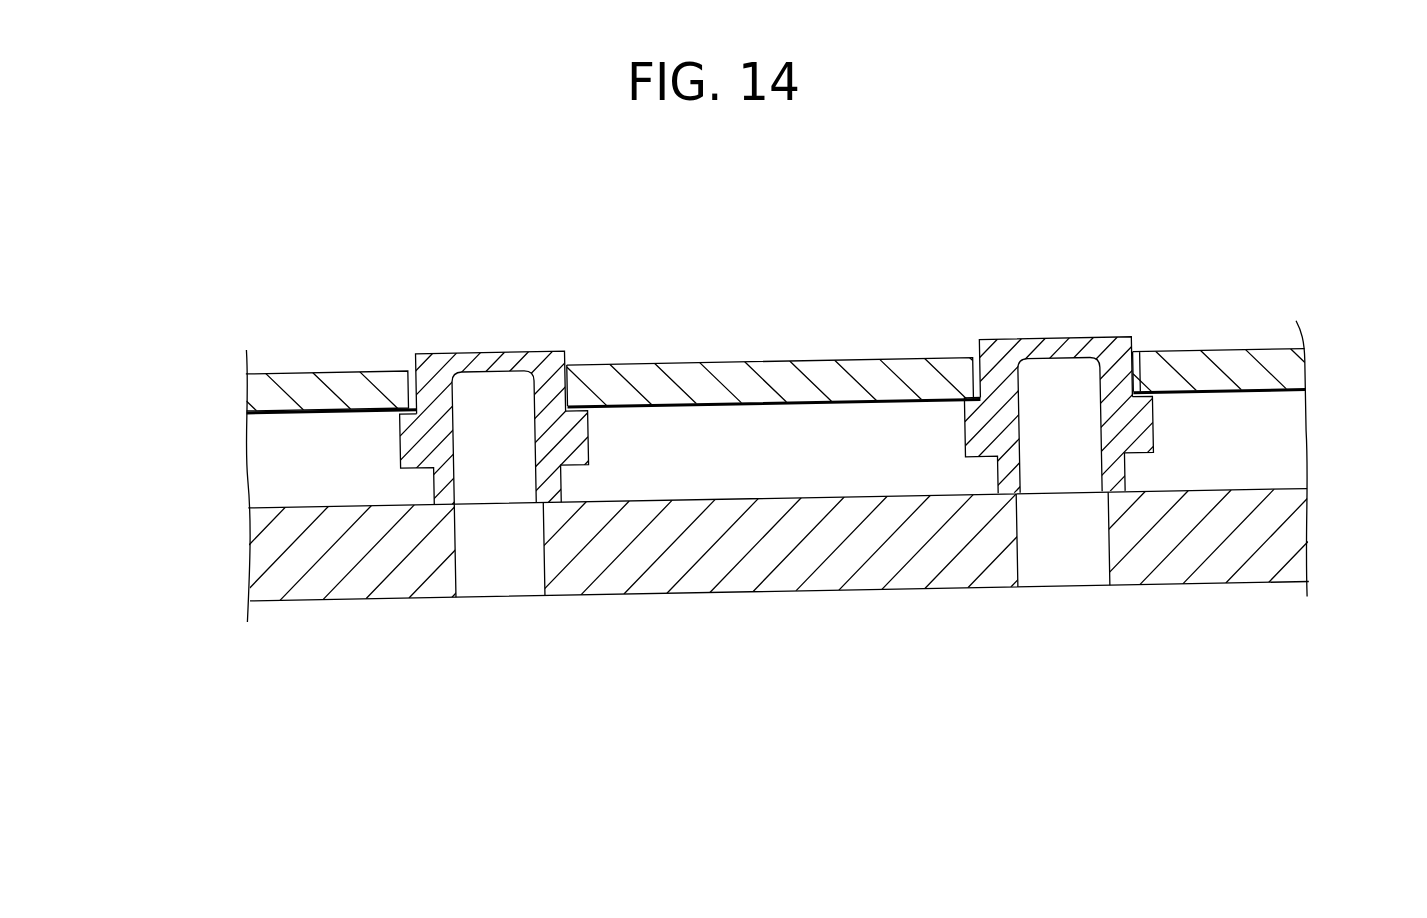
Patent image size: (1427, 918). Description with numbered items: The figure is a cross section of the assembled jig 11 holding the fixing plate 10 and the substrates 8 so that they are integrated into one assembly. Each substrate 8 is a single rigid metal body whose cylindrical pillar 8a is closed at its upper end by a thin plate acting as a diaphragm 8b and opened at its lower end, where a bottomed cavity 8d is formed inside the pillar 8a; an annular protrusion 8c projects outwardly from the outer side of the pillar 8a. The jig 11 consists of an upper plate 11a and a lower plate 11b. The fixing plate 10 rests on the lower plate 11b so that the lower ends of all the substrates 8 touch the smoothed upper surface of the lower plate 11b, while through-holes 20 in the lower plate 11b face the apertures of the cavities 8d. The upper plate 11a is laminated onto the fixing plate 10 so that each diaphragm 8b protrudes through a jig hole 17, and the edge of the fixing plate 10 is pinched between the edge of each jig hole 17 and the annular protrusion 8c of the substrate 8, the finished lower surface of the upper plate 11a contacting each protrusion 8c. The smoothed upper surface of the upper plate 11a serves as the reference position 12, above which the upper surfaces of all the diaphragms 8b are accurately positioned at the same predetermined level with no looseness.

The substrate 8 is at (854, 437).
The cylindrical pillar 8a is at (612, 366).
The diaphragm 8b is at (488, 352).
The annular protrusion 8c is at (590, 445).
The cavity 8d is at (535, 478).
The fixing plate 10 is at (1306, 392).
The jig 11 is at (691, 471).
The upper plate 11a is at (247, 397).
The lower plate 11b is at (737, 545).
The reference position 12 is at (331, 369).
The jig hole 17 is at (432, 362).
The through-hole 20 is at (455, 574).